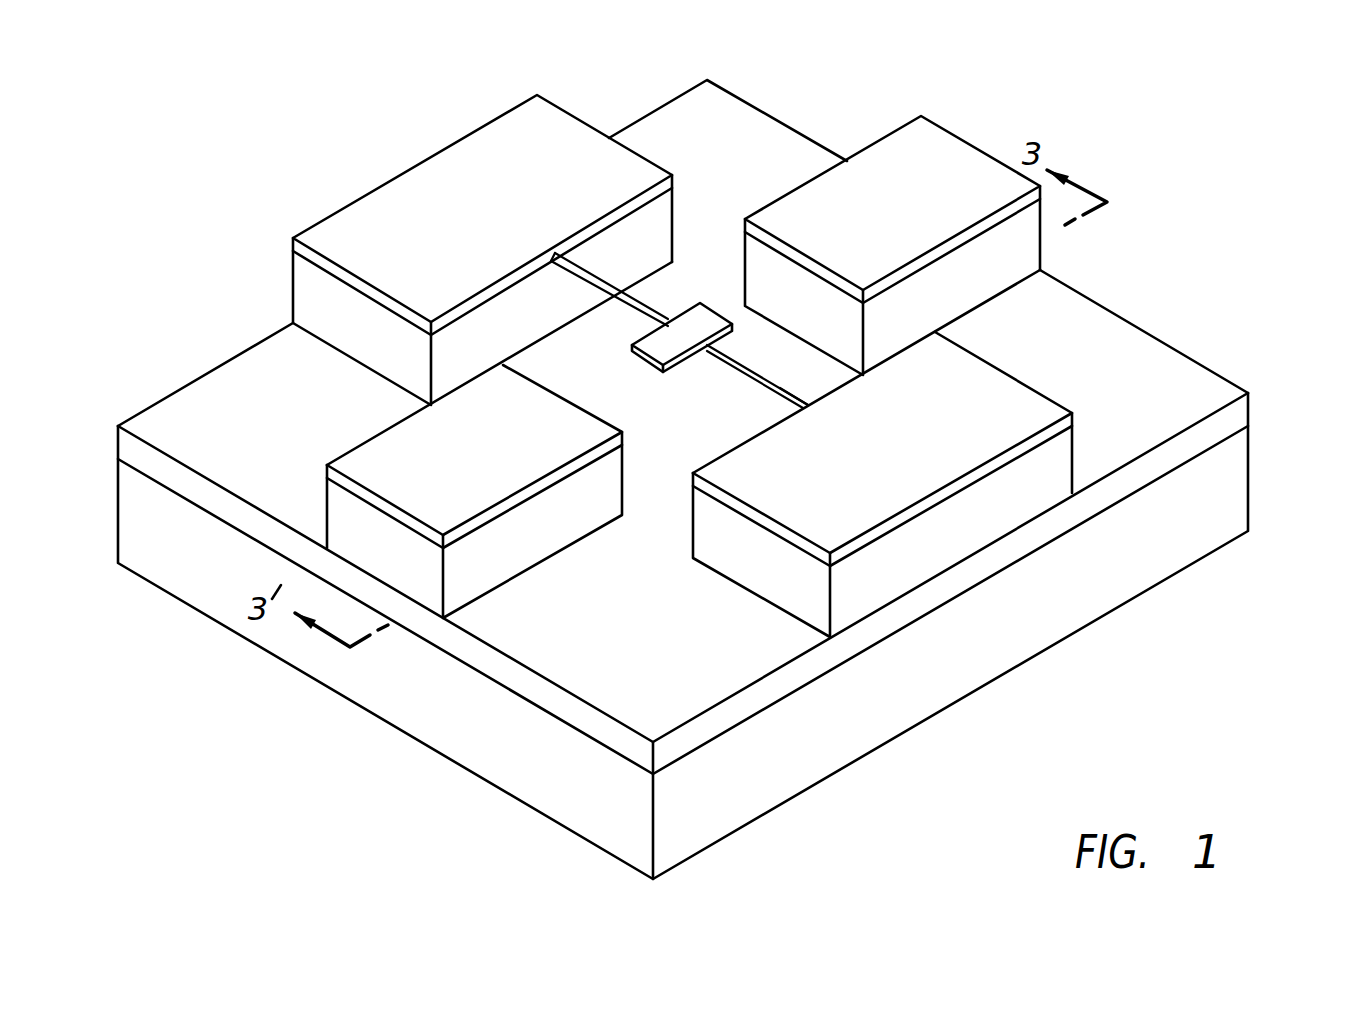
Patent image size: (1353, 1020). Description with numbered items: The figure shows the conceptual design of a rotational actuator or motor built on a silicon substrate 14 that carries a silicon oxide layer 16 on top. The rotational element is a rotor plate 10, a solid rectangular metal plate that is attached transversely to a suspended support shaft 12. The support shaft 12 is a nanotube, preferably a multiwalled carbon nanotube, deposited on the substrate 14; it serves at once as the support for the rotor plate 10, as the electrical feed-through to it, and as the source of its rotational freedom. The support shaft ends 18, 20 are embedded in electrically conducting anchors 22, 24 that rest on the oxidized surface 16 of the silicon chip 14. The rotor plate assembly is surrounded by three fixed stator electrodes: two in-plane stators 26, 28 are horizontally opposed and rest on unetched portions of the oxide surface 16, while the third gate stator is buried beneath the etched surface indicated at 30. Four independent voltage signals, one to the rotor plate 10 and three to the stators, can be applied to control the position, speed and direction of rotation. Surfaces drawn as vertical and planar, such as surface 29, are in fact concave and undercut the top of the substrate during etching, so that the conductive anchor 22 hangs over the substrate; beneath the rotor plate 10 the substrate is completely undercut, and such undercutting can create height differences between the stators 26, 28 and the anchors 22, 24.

The rotor plate 10 is at (683, 327).
The suspended support shaft 12 is at (603, 280).
The silicon substrate 14 is at (1052, 595).
The silicon oxide layer 16 is at (1237, 415).
The support shaft end 18 is at (552, 257).
The support shaft end 20 is at (830, 390).
The anchor 22 is at (425, 197).
The anchor 24 is at (990, 397).
The in-plane stator 26 is at (380, 453).
The in-plane stator 28 is at (948, 162).
The surface 29 is at (483, 344).
The etched surface 30 is at (665, 430).